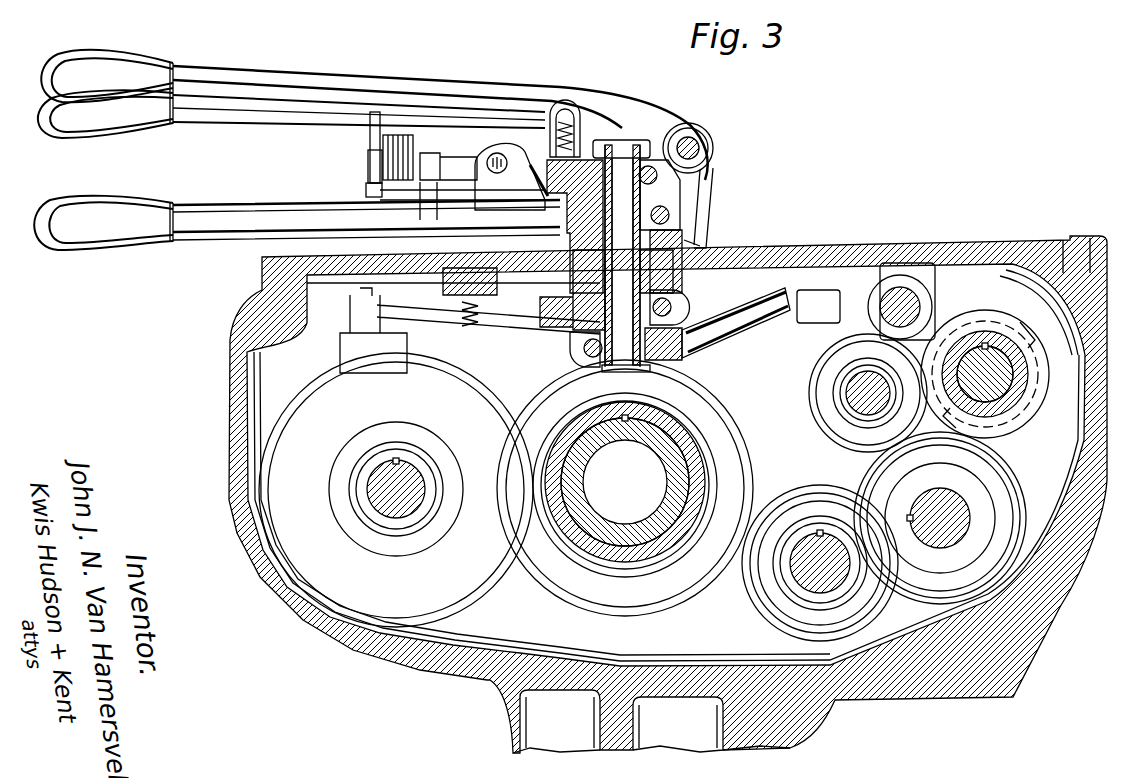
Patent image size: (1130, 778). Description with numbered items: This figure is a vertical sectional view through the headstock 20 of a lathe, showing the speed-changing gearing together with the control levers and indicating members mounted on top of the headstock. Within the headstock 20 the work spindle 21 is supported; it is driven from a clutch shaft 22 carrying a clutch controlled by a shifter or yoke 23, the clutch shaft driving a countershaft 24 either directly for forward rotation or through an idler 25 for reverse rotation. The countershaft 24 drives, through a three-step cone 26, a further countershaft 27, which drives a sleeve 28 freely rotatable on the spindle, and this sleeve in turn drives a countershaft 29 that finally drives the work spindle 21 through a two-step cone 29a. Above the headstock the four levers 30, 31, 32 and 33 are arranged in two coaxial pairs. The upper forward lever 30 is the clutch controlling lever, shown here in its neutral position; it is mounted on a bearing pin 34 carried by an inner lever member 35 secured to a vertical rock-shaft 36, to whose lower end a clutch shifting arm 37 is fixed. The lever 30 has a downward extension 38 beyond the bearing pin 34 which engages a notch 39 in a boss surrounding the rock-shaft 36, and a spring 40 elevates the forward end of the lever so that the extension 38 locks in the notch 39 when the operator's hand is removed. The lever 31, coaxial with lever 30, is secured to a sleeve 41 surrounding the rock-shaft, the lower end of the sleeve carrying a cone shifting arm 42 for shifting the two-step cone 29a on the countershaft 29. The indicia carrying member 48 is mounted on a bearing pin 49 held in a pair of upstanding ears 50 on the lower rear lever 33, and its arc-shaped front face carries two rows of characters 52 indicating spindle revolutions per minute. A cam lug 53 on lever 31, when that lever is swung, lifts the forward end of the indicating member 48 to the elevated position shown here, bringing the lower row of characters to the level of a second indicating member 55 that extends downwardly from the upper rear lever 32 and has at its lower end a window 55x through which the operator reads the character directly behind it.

The headstock 20 is at (832, 250).
The work spindle 21 is at (655, 460).
The clutch shaft 22 is at (1003, 392).
The shifter or yoke 23 is at (962, 322).
The countershaft 24 is at (960, 510).
The idler 25 is at (826, 412).
The three-step cone 26 is at (1018, 528).
The countershaft 27 is at (806, 560).
The sleeve 28 is at (725, 410).
The countershaft 29 is at (390, 492).
The two-step cone 29a is at (490, 598).
The clutch controlling lever 30 is at (306, 68).
The lever 31 is at (258, 210).
The lever 32 is at (241, 112).
The lever 33 is at (48, 215).
The bearing pin 34 is at (692, 148).
The inner lever member 35 is at (563, 235).
The vertical rock-shaft 36 is at (621, 256).
The clutch shifting arm 37 is at (748, 340).
The downward extension 38 is at (705, 222).
The notch 39 is at (706, 244).
The spring 40 is at (582, 102).
The sleeve 41 is at (676, 282).
The cone shifting arm 42 is at (520, 320).
The indicia carrying member 48 is at (456, 158).
The bearing pin 49 is at (496, 156).
The upstanding ears 50 is at (486, 192).
The characters 52 is at (383, 150).
The cam lug 53 is at (385, 190).
The indicating member 55 is at (370, 138).
The window 55x is at (370, 168).